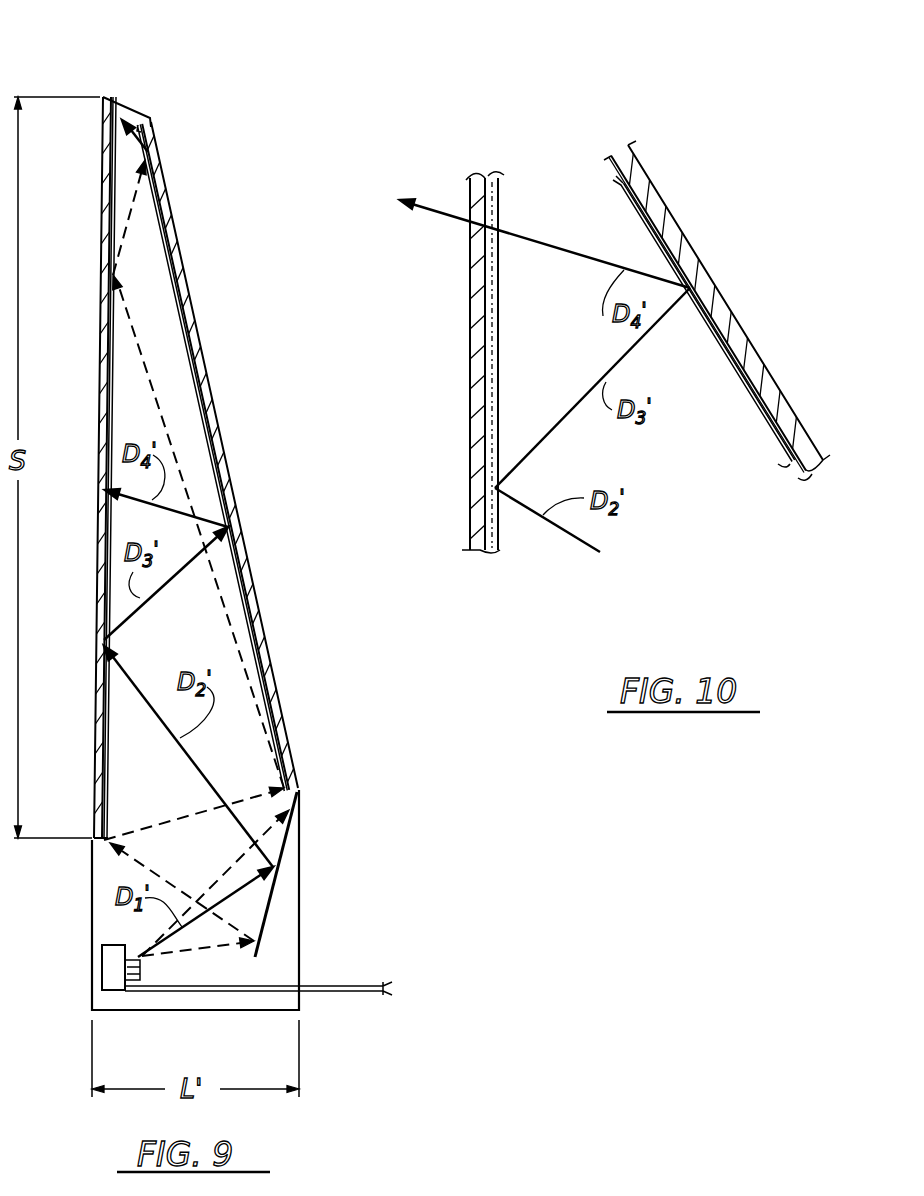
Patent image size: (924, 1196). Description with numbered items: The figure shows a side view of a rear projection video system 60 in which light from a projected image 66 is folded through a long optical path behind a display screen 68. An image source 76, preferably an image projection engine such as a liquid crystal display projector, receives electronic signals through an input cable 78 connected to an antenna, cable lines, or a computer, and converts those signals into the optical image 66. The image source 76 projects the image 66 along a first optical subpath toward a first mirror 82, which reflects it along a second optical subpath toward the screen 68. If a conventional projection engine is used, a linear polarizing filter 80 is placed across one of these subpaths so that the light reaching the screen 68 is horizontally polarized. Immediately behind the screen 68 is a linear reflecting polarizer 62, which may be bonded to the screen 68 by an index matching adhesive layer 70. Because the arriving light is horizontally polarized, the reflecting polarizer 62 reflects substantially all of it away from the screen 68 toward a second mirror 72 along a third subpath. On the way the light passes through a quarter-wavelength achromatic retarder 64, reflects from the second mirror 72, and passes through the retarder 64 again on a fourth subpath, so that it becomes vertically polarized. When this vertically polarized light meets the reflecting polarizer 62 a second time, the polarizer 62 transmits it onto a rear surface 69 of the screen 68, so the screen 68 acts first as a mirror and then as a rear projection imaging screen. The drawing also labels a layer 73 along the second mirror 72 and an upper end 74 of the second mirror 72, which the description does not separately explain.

In FIG. 9, the rear projection video system 60 is at (190, 190).
In FIG. 9, the linear reflecting polarizer 62 is at (113, 147).
In FIG. 10, the linear reflecting polarizer 62 is at (500, 324).
In FIG. 9, the achromatic retarder 64 is at (241, 593).
In FIG. 10, the achromatic retarder 64 is at (741, 398).
In FIG. 9, the projected image 66 is at (174, 968).
In FIG. 9, the display screen 68 is at (108, 112).
In FIG. 10, the display screen 68 is at (469, 324).
In FIG. 10, the rear surface 69 is at (476, 198).
In FIG. 10, the index matching adhesive layer 70 is at (486, 551).
In FIG. 9, the second mirror 72 is at (198, 324).
In FIG. 10, the second mirror 72 is at (666, 204).
In FIG. 9, the reflective coating 73 is at (198, 341).
In FIG. 10, the reflective coating 73 is at (800, 476).
In FIG. 10, the upper end of inclined panel 74 is at (617, 178).
In FIG. 9, the image source 76 is at (100, 958).
In FIG. 9, the input cable 78 is at (330, 985).
In FIG. 9, the linear polarizing filter 80 is at (146, 966).
In FIG. 9, the first mirror 82 is at (268, 913).